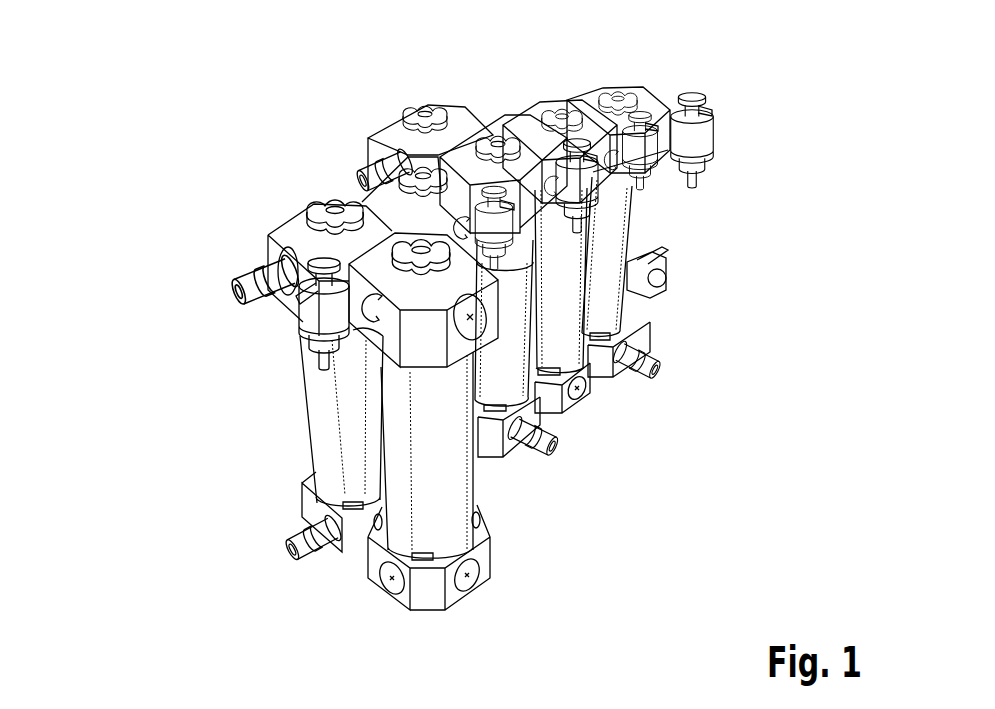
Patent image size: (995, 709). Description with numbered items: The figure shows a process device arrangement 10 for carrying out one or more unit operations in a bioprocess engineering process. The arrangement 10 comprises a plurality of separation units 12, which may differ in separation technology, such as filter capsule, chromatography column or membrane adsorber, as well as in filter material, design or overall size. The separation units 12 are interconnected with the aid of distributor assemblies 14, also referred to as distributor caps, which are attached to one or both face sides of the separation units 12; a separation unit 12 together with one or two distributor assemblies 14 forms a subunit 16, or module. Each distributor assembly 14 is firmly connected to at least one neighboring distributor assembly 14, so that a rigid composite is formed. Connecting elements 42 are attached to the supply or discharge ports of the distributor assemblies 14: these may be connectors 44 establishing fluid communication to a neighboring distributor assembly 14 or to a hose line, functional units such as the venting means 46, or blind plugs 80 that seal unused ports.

The process device arrangement 10 is at (316, 102).
The separation unit 12 is at (617, 210).
The distributor assembly 14 is at (392, 128).
The subunit 16 is at (268, 222).
The connecting element 42 is at (475, 372).
The connector 44 is at (353, 165).
The venting means 46 is at (318, 320).
The blind plug 80 is at (393, 588).